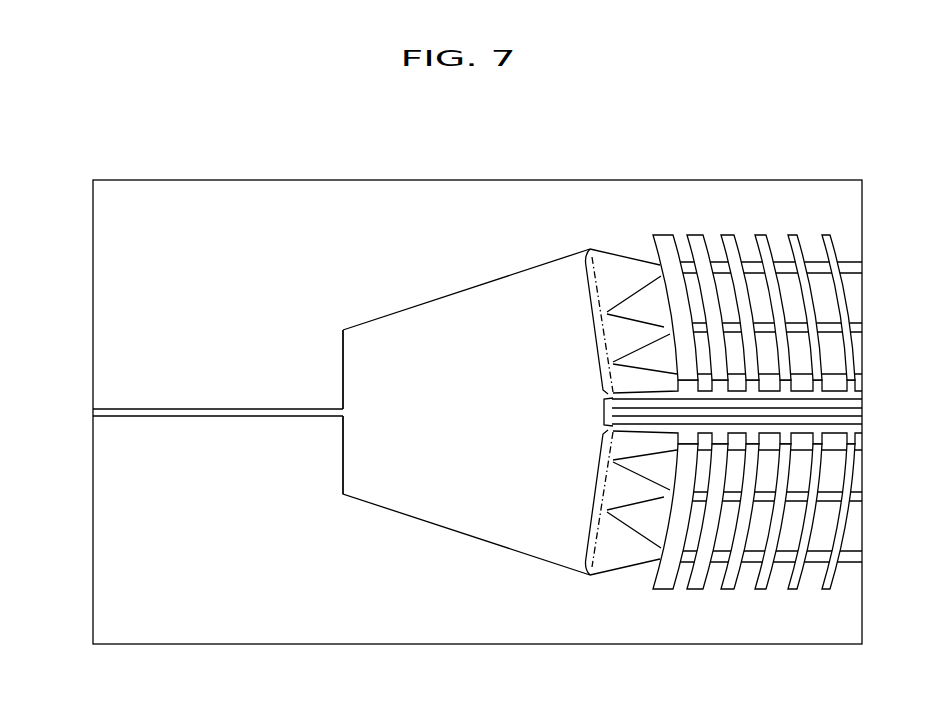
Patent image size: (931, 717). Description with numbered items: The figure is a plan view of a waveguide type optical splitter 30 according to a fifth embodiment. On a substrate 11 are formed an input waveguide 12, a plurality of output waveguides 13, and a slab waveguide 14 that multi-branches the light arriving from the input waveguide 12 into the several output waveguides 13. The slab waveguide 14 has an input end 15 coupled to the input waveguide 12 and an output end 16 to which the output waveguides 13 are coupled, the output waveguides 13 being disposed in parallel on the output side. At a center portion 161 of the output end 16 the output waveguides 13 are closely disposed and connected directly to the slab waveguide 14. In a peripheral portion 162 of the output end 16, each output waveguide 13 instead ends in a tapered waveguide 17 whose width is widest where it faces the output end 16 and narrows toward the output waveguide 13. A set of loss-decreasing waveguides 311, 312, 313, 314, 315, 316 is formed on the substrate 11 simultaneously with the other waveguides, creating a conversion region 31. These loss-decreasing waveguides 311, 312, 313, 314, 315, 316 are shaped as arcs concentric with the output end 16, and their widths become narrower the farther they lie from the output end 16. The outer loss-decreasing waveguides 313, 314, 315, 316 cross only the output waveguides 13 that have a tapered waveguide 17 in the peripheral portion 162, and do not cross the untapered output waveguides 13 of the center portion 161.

The waveguide type optical splitter 30 is at (190, 173).
The substrate 11 is at (228, 614).
The input waveguide 12 is at (117, 409).
The output waveguides 13 is at (845, 563).
The slab waveguide 14 is at (463, 515).
The input end 15 is at (343, 458).
The output end 16 is at (601, 518).
The center portion 161 is at (600, 412).
The peripheral portion 162 is at (597, 320).
The tapered waveguide 17 is at (627, 567).
The conversion region 31 is at (759, 352).
The loss-decreasing waveguide 311 is at (663, 235).
The loss-decreasing waveguide 312 is at (697, 235).
The loss-decreasing waveguide 313 is at (727, 235).
The loss-decreasing waveguide 314 is at (760, 235).
The loss-decreasing waveguide 315 is at (792, 235).
The loss-decreasing waveguide 316 is at (827, 235).